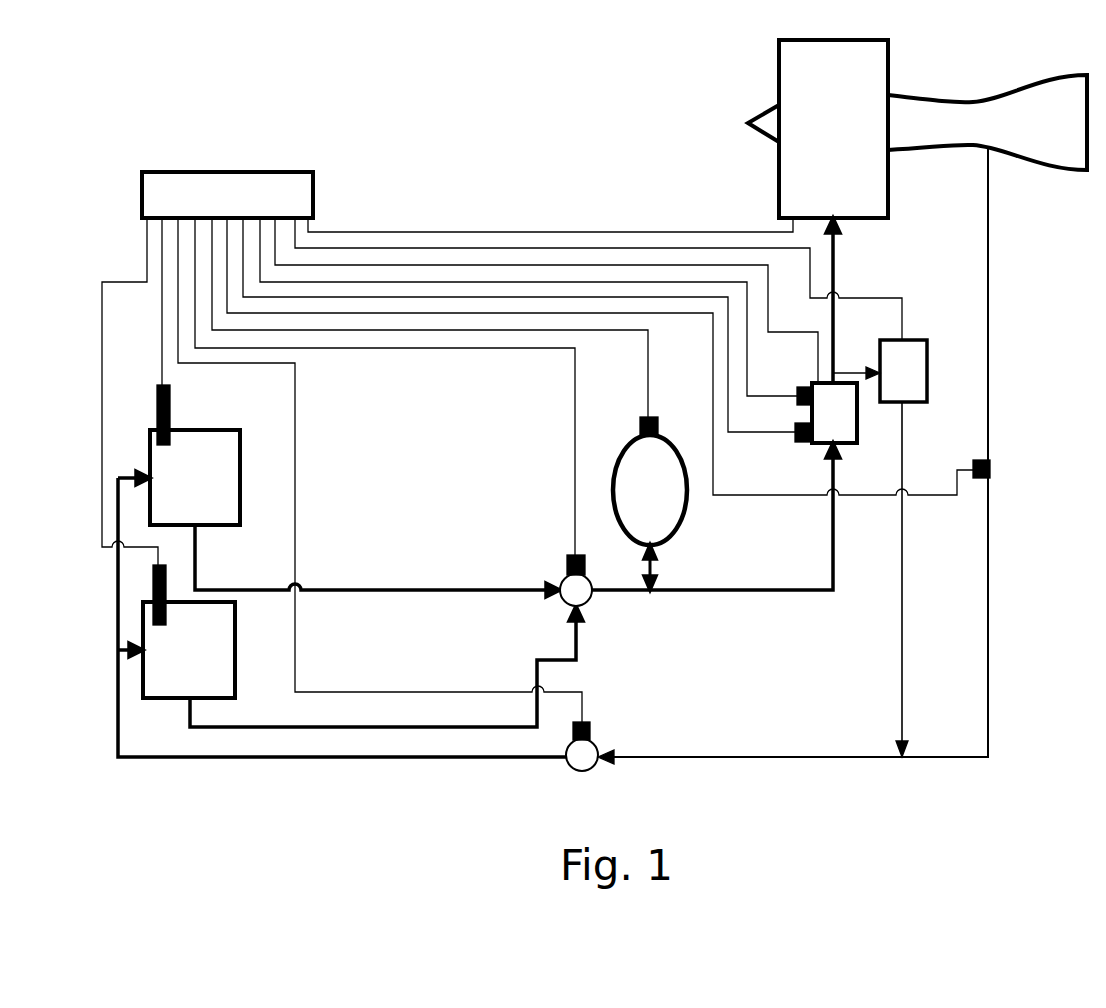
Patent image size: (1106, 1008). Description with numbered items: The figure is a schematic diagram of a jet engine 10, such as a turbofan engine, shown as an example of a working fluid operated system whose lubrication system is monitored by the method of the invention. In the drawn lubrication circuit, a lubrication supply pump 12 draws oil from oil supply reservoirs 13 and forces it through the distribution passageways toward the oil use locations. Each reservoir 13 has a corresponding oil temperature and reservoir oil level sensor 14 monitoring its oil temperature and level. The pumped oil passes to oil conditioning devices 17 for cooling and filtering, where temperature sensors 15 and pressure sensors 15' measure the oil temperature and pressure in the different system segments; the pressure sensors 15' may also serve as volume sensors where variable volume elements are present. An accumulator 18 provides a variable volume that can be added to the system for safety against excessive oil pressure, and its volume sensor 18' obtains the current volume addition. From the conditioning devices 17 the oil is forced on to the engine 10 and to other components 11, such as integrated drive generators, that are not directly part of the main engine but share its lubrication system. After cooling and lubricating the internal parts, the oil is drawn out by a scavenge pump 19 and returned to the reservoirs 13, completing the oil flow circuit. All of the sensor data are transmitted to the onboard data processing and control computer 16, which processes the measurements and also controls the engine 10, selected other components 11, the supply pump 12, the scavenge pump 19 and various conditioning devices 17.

The jet engine 10 is at (888, 78).
The other components 11 is at (918, 340).
The lubrication supply pump 12 is at (562, 578).
The oil supply reservoir 13 is at (215, 427).
The oil temperature and reservoir oil level sensor 14 is at (170, 407).
The temperature sensor 15 is at (875, 420).
The pressure sensor 15' is at (786, 420).
The onboard data processing and control computer 16 is at (197, 170).
The oil conditioning devices 17 is at (815, 443).
The accumulator 18 is at (638, 484).
The volume sensor 18' is at (676, 415).
The scavenge pump 19 is at (567, 763).